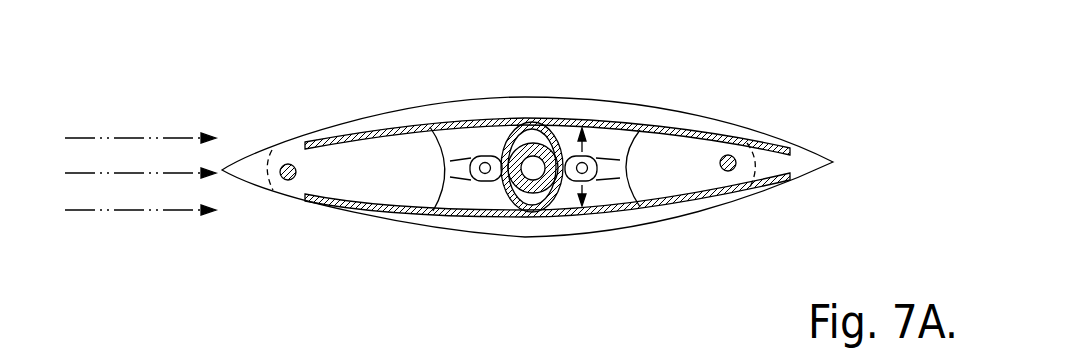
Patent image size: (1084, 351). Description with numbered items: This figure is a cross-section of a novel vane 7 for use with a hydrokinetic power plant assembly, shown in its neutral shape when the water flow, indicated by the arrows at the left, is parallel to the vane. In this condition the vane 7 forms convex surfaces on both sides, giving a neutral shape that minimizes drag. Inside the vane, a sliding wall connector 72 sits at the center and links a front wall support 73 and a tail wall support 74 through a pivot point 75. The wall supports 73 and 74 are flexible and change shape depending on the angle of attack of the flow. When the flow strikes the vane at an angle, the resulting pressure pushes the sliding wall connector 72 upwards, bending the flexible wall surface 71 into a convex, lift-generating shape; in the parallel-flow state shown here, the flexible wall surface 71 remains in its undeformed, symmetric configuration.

The vane 7 is at (545, 106).
The flexible wall surface 71 is at (613, 120).
The sliding wall connector 72 is at (503, 130).
The front wall support 73 is at (325, 182).
The tail wall support 74 is at (663, 172).
The pivot point 75 is at (733, 156).